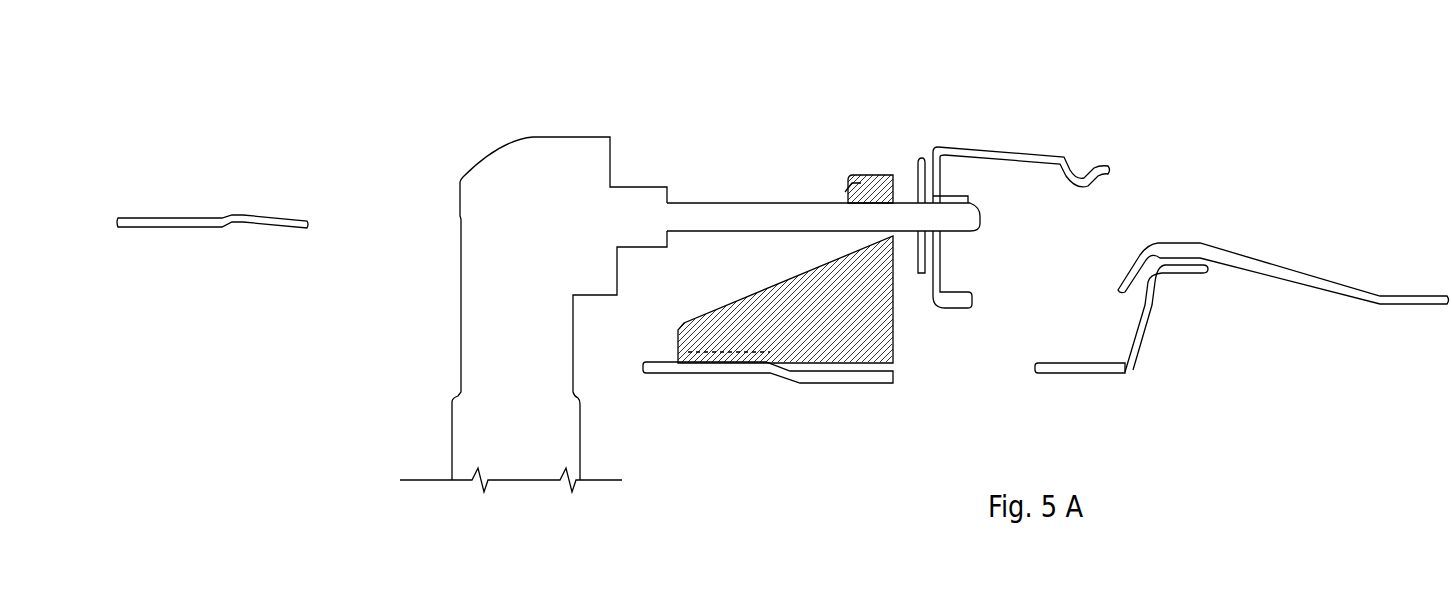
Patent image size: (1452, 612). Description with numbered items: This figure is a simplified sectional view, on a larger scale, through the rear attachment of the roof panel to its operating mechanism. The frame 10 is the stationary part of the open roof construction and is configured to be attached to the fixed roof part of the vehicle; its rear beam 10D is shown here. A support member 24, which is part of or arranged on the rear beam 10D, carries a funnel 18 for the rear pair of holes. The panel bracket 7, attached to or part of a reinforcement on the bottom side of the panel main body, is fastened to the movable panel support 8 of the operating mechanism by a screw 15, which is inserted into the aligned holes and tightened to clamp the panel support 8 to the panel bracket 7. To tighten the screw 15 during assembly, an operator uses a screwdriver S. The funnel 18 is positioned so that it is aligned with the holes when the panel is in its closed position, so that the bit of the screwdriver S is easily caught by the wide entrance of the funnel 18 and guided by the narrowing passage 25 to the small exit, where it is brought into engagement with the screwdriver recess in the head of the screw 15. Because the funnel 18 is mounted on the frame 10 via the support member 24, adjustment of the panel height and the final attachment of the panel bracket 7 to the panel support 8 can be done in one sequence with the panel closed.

The screwdriver S is at (525, 207).
The rear beam 10D is at (680, 366).
The support member 24 is at (812, 308).
The narrowing passage 25 is at (845, 191).
The funnel 18 is at (860, 188).
The screw 15 is at (938, 212).
The panel support 8 is at (938, 190).
The panel bracket 7 is at (1042, 165).
The frame 10 is at (1120, 370).